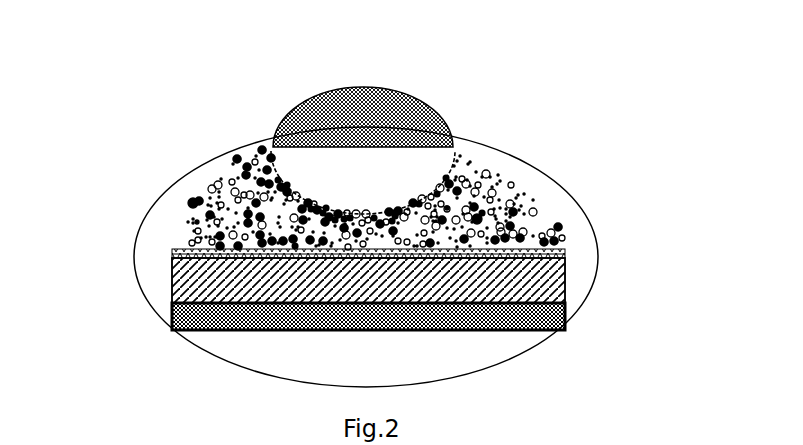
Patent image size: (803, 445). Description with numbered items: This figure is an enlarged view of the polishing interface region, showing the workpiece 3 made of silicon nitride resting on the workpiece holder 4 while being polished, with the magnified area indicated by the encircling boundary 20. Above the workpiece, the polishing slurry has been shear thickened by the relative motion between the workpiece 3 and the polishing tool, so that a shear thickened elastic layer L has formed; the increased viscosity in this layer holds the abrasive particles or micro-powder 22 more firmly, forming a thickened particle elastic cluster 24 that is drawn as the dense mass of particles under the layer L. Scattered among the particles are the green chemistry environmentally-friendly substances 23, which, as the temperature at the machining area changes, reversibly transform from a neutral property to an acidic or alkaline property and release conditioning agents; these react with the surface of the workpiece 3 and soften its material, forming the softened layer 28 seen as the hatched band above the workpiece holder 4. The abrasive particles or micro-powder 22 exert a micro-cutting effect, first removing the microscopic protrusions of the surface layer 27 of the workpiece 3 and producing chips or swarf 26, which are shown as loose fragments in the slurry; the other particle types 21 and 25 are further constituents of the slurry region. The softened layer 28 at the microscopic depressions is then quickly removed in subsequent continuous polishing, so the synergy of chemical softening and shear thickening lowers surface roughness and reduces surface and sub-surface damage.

The enlarged region 20 is at (327, 130).
The shear thickened elastic layer L is at (447, 168).
The first particles 21 is at (214, 183).
The abrasive particles or micro-powder 22 is at (189, 200).
The green chemistry environmentally-friendly substances 23 is at (195, 221).
The thickened particle elastic cluster 24 is at (449, 206).
The fifth particles 25 is at (480, 217).
The chips or swarf 26 is at (503, 226).
The surface layer 27 is at (565, 252).
The softened layer 28 is at (565, 277).
The workpiece 3 is at (488, 272).
The workpiece holder 4 is at (520, 332).